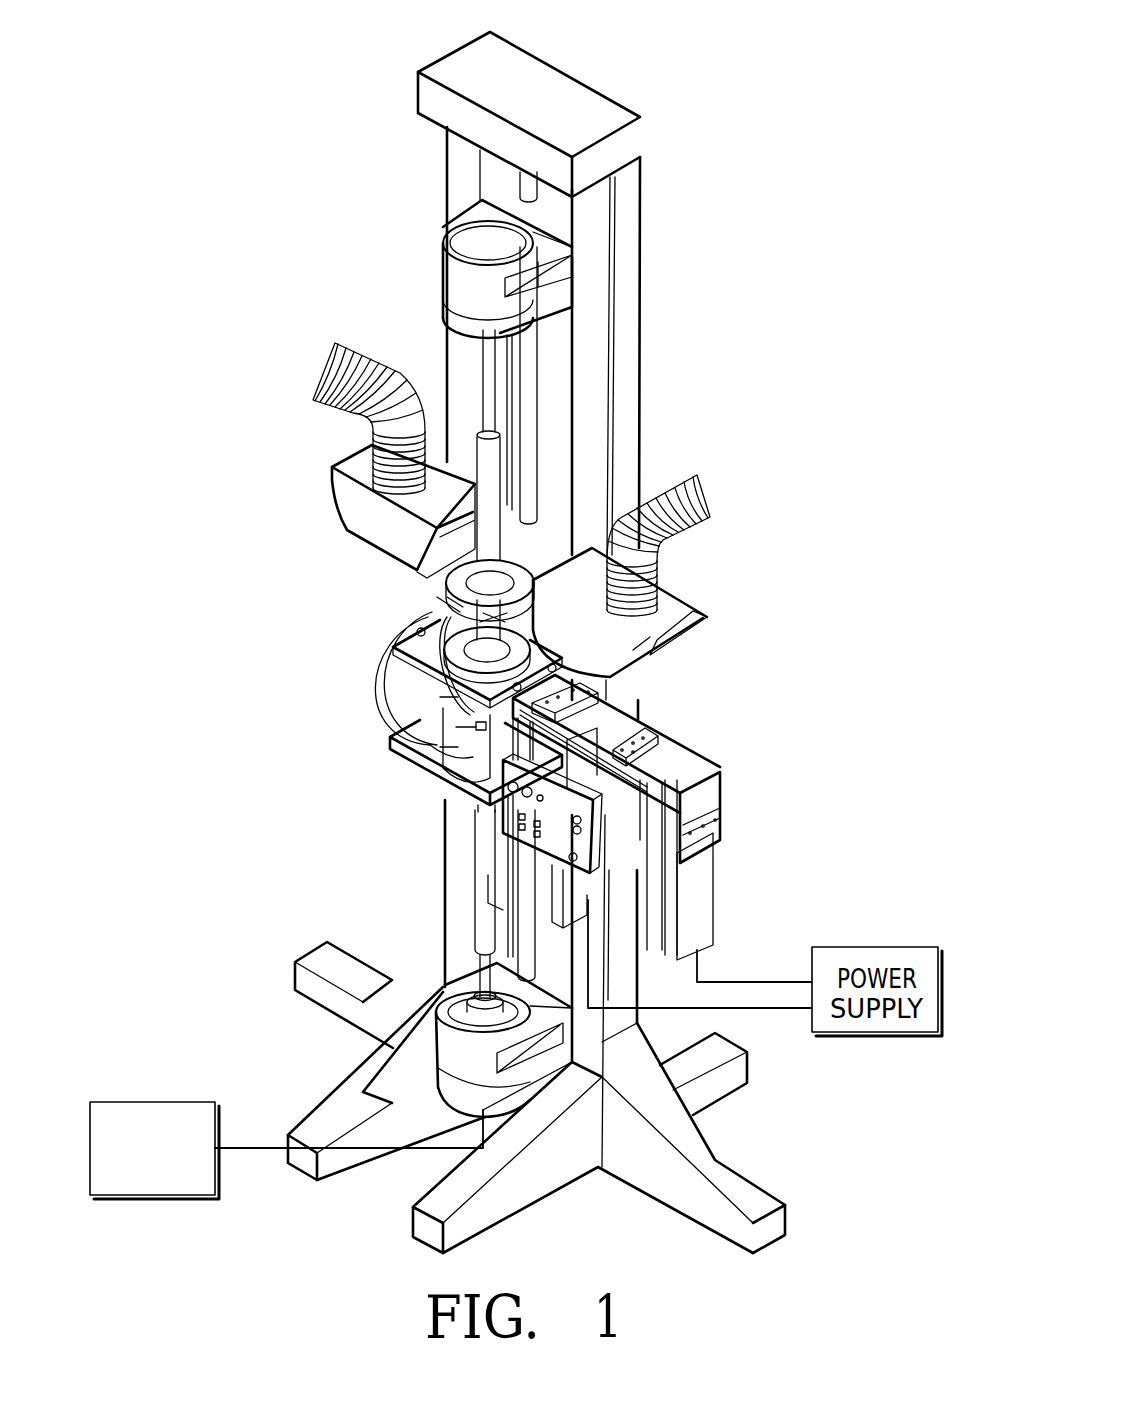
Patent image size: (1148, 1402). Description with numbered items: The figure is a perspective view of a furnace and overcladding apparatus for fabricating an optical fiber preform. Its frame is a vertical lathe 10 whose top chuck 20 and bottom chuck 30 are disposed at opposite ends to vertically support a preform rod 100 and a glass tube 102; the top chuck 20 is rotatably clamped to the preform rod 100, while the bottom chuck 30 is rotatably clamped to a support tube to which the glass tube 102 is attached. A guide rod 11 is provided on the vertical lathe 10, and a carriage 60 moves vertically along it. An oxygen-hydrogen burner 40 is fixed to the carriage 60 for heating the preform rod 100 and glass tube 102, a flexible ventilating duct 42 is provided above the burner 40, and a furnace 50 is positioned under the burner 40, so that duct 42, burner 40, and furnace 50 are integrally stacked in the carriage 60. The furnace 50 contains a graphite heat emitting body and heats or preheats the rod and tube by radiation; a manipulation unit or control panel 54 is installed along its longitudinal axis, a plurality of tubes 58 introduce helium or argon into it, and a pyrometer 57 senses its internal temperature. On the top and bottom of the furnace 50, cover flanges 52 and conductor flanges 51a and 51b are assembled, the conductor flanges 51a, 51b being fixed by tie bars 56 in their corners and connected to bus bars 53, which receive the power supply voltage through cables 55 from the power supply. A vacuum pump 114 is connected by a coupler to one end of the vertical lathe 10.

The vertical lathe 10 is at (600, 76).
The preform rod 100 is at (488, 365).
The glass tube 102 is at (485, 457).
The guide rod 11 is at (527, 392).
The top chuck 20 is at (416, 288).
The flexible ventilating duct 42 is at (345, 507).
The oxygen-hydrogen burner 40 is at (412, 595).
The cover flange 52 is at (457, 615).
The conductor flange 51a is at (413, 627).
The furnace 50 is at (402, 726).
The tubes 58 is at (390, 697).
The tie bars 56 is at (403, 725).
The conductor flange 51b is at (390, 747).
The pyrometer 57 is at (473, 757).
The manipulation unit (control panel) 54 is at (496, 837).
The bus bars 53 is at (675, 755).
The cables 55 is at (600, 888).
The carriage 60 is at (545, 550).
The bottom chuck 30 is at (417, 1041).
The vacuum pump 114 is at (152, 1102).